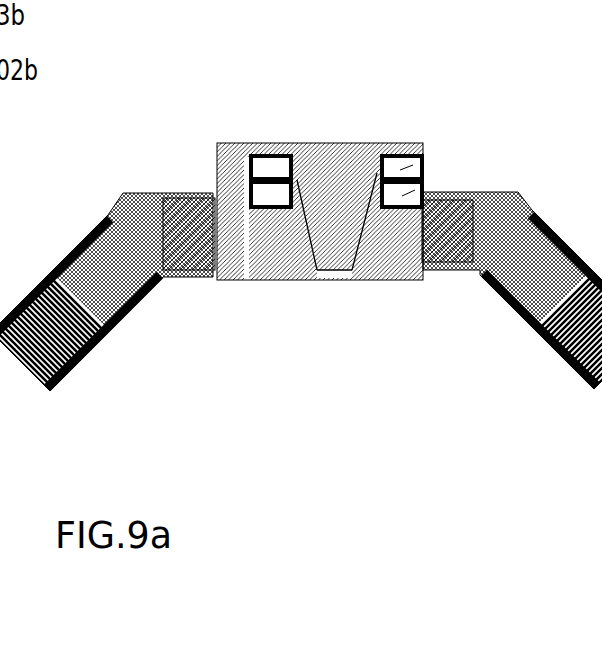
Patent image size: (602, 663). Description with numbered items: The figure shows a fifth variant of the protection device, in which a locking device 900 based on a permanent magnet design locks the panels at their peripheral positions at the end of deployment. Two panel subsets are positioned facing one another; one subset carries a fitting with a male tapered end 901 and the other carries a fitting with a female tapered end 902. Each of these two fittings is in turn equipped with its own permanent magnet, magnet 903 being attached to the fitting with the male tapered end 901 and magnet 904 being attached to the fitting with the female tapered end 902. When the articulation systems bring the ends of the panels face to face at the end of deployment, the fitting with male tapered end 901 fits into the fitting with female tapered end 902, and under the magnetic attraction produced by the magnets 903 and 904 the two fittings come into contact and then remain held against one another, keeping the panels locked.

The connector assembly 900 is at (217, 112).
The fitting with male tapered end 901 is at (347, 163).
The fitting with female tapered end 902 is at (293, 280).
The permanent magnet 903 is at (427, 167).
The permanent magnet 904 is at (427, 190).